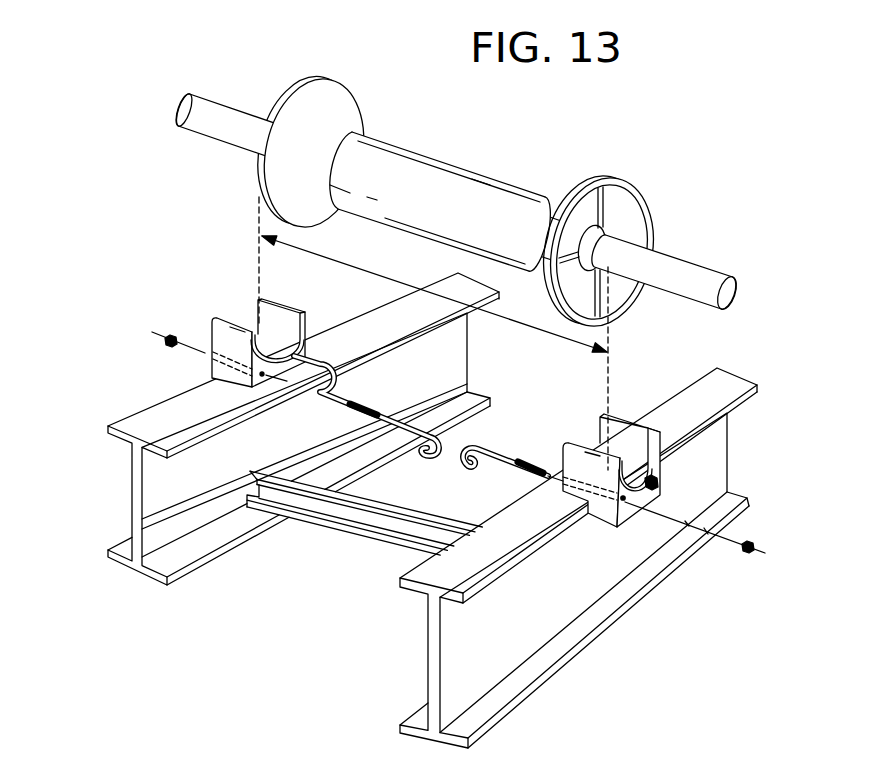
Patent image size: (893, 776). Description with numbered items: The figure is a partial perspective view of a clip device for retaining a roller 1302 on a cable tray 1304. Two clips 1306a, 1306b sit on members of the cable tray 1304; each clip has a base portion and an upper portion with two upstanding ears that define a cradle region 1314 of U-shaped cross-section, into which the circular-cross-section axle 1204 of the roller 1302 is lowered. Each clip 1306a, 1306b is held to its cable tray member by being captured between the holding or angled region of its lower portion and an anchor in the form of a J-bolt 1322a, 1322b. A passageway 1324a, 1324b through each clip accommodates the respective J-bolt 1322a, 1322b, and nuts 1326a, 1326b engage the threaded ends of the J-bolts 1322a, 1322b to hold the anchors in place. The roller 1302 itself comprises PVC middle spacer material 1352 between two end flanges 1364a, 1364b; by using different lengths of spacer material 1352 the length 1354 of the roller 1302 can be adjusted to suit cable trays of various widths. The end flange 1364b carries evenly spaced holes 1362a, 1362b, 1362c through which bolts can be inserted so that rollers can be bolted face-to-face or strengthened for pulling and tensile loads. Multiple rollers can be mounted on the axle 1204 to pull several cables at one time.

The roller 1302 is at (479, 199).
The cable tray 1304 is at (105, 502).
The clip 1306a is at (279, 312).
The clip 1306b is at (620, 417).
The cradle region 1314 is at (482, 397).
The J-bolt 1322a is at (437, 447).
The J-bolt 1322b is at (480, 448).
The passageway 1324a is at (623, 500).
The passageway 1324b is at (657, 484).
The nut 1326a is at (167, 347).
The nut 1326b is at (749, 551).
The PVC middle spacer material 1352 is at (421, 163).
The length of the roller 1354 is at (343, 262).
The hole 1362a is at (601, 226).
The hole 1362b is at (582, 253).
The hole 1362c is at (596, 272).
The end flange 1364a is at (350, 92).
The end flange 1364b is at (617, 247).
The axle 1204 is at (722, 279).